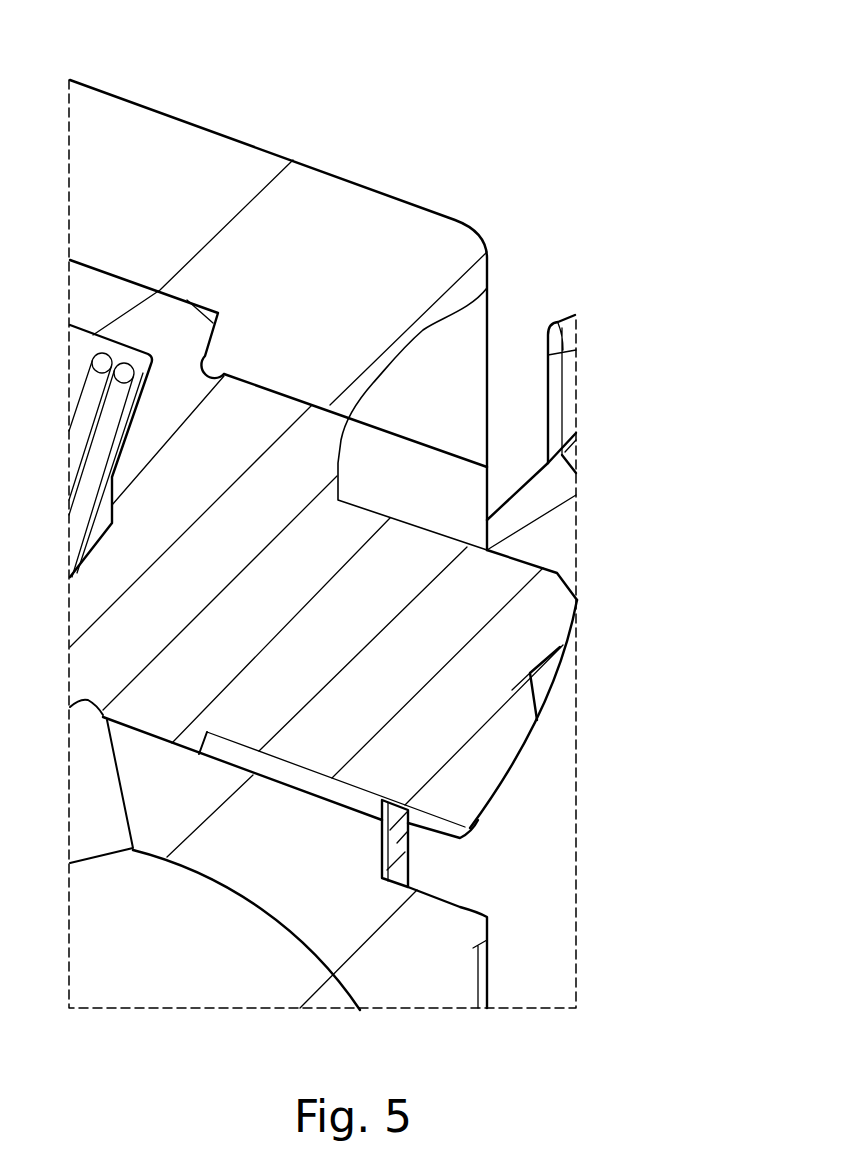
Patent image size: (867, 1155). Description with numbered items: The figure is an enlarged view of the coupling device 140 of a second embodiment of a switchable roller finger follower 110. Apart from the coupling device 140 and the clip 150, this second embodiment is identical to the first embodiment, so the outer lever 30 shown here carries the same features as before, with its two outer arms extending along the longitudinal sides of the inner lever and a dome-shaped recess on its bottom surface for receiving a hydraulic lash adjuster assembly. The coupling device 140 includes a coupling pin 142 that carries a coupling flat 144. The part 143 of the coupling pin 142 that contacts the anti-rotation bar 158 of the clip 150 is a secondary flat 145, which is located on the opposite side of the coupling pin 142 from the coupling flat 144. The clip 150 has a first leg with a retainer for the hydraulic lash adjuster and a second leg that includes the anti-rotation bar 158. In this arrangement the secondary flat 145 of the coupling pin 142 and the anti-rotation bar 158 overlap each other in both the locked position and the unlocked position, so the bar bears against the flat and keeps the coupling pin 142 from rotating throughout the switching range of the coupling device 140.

The switchable roller finger follower 110 is at (141, 94).
The outer lever 30 is at (288, 224).
The coupling device 140 is at (302, 375).
The coupling flat 144 is at (487, 288).
The coupling pin 142 is at (438, 610).
The part of the coupling pin 143 is at (372, 790).
The secondary flat 145 is at (290, 777).
The clip 150 is at (395, 847).
The anti-rotation bar 158 is at (398, 875).